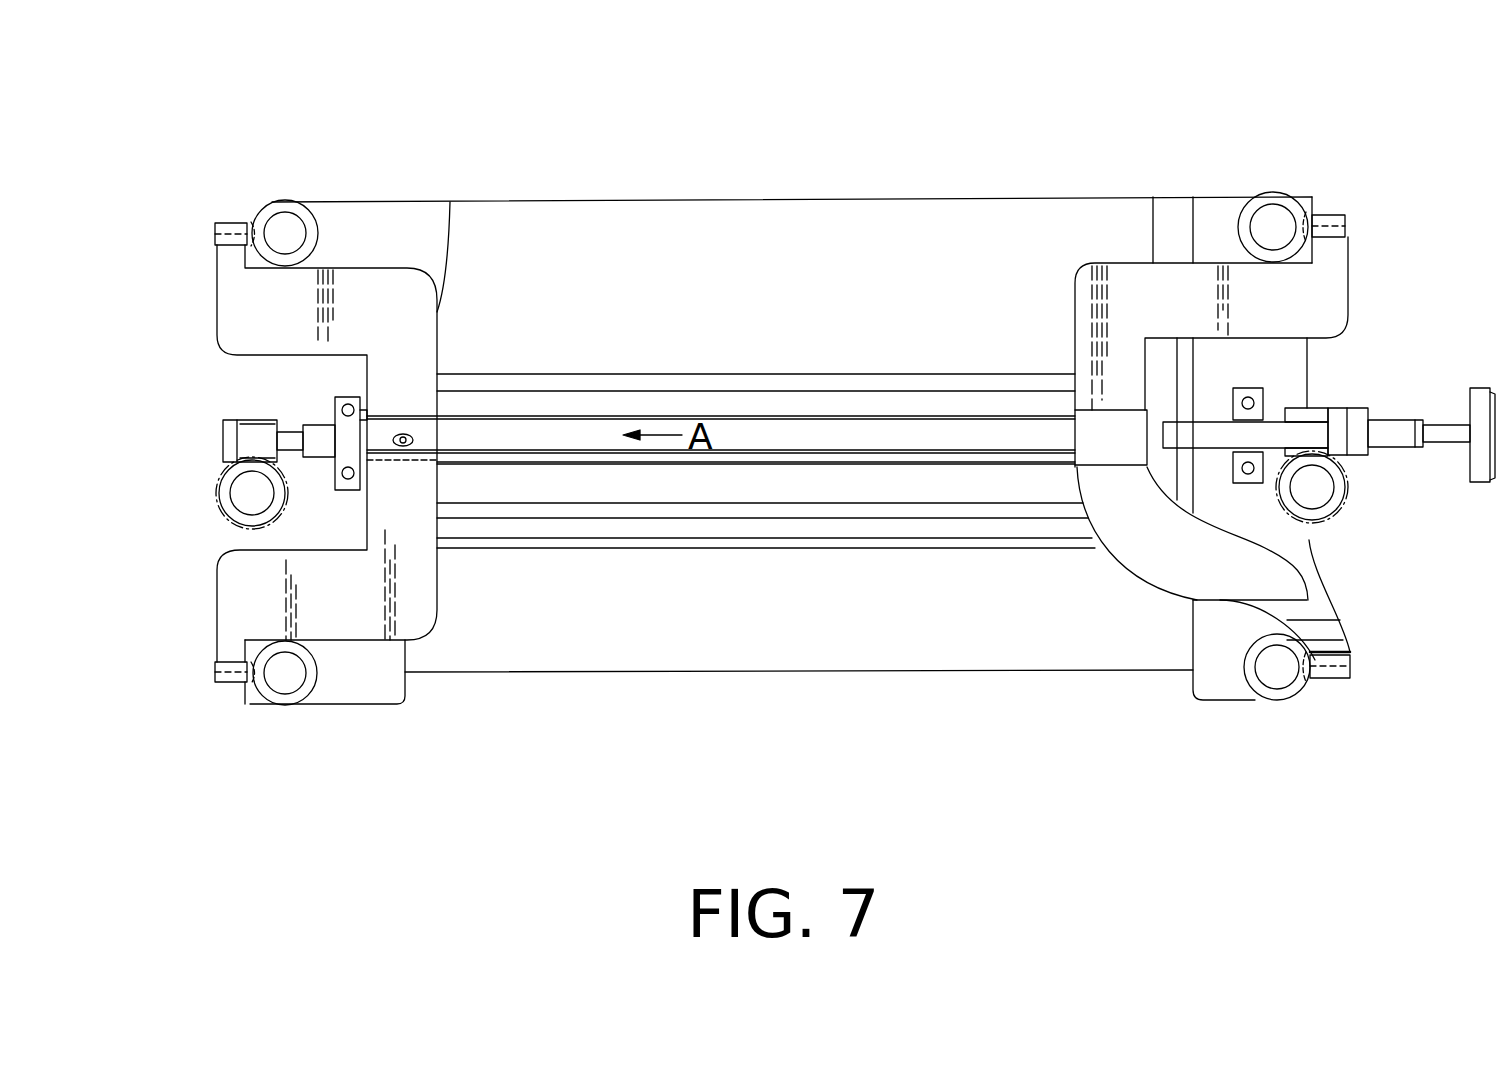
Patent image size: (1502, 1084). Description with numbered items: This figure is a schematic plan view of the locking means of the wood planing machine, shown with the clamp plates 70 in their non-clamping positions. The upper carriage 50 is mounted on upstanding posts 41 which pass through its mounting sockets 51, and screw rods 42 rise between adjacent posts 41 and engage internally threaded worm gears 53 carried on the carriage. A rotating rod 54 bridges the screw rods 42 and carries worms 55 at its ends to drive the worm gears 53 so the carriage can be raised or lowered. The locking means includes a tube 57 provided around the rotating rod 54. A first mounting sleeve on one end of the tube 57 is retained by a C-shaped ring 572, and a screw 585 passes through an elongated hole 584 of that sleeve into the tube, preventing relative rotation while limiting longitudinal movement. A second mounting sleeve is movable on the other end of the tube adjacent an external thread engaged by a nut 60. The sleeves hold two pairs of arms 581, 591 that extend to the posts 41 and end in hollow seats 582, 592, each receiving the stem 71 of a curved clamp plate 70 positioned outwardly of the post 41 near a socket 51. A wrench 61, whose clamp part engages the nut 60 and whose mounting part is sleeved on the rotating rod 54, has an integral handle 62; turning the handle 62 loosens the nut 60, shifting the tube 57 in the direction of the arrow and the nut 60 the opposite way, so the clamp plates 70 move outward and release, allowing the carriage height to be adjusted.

The upper carriage 50 is at (733, 190).
The arms 581 is at (222, 276).
The hollow seats 582 is at (233, 683).
The posts 41 is at (300, 675).
The clamp plates 70 is at (286, 705).
The stem 71 is at (1335, 680).
The mounting sockets 51 is at (1258, 212).
The hollow seats 592 is at (1333, 215).
The arms 591 is at (1340, 262).
The tube 57 is at (833, 424).
The C-shaped ring 572 is at (362, 400).
The screw 585 is at (405, 437).
The elongated hole 584 is at (438, 457).
The worms 55 is at (245, 420).
The screw rods 42 is at (240, 488).
The worm gears 53 is at (240, 518).
The nut 60 is at (1321, 403).
The wrench 61 is at (1359, 403).
The handle 62 is at (1396, 424).
The rotating rod 54 is at (1452, 425).